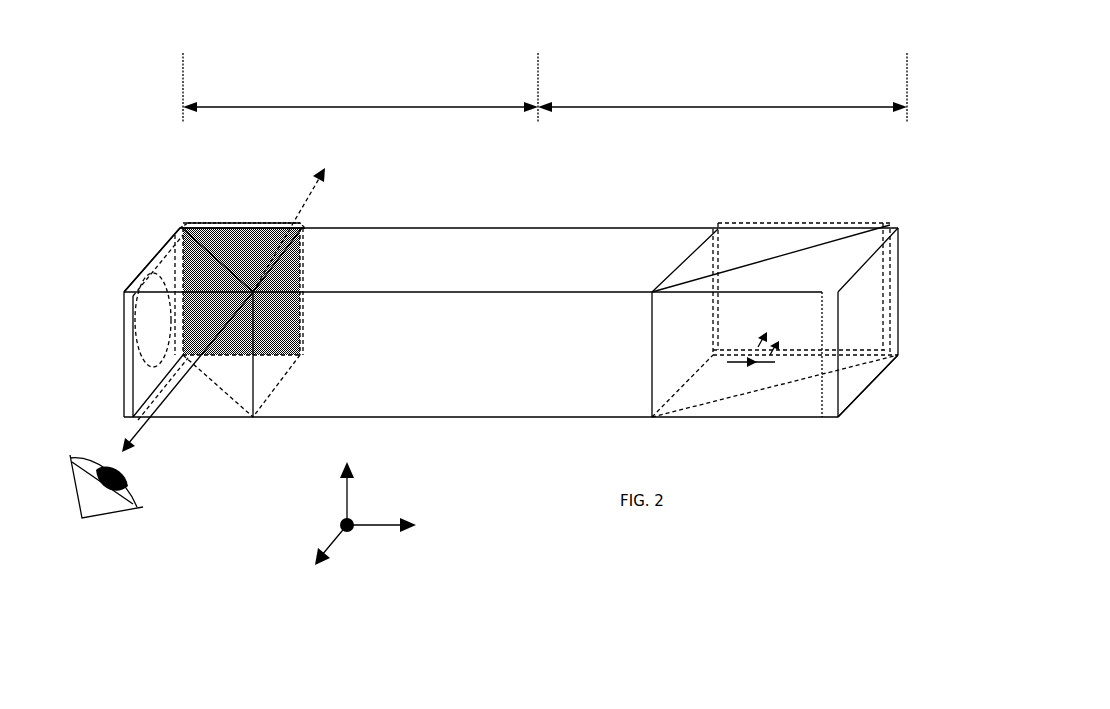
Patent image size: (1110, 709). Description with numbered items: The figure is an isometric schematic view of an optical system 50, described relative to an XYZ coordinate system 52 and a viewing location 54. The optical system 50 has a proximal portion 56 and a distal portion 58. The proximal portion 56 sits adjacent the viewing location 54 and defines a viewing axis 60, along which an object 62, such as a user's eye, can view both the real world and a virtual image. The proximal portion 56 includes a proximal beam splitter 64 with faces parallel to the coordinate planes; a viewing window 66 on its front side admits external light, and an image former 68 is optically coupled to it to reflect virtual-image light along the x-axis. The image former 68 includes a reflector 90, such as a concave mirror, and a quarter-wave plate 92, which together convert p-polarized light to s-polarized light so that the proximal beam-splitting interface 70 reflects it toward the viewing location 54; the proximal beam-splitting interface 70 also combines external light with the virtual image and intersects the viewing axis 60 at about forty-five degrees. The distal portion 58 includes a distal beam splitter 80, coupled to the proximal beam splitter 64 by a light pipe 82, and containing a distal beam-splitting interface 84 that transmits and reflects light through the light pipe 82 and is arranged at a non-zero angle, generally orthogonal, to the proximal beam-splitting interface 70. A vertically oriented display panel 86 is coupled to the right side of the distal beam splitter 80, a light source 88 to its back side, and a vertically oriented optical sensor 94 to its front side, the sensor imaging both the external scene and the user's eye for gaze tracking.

The optical system 50 is at (514, 548).
The XYZ coordinate system 52 is at (383, 530).
The viewing location 54 is at (163, 530).
The proximal portion 56 is at (383, 105).
The distal portion 58 is at (714, 105).
The viewing axis 60 is at (313, 186).
The object 62 is at (122, 513).
The proximal beam splitter 64 is at (258, 418).
The viewing window 66 is at (258, 223).
The image former 68 is at (136, 256).
The proximal beam-splitting interface 70 is at (198, 223).
The distal beam splitter 80 is at (675, 265).
The light pipe 82 is at (483, 418).
The distal beam-splitting interface 84 is at (692, 280).
The display panel 86 is at (901, 295).
The light source 88 is at (757, 364).
The reflector 90 is at (136, 286).
The quarter-wave plate 92 is at (178, 227).
The optical sensor 94 is at (892, 222).